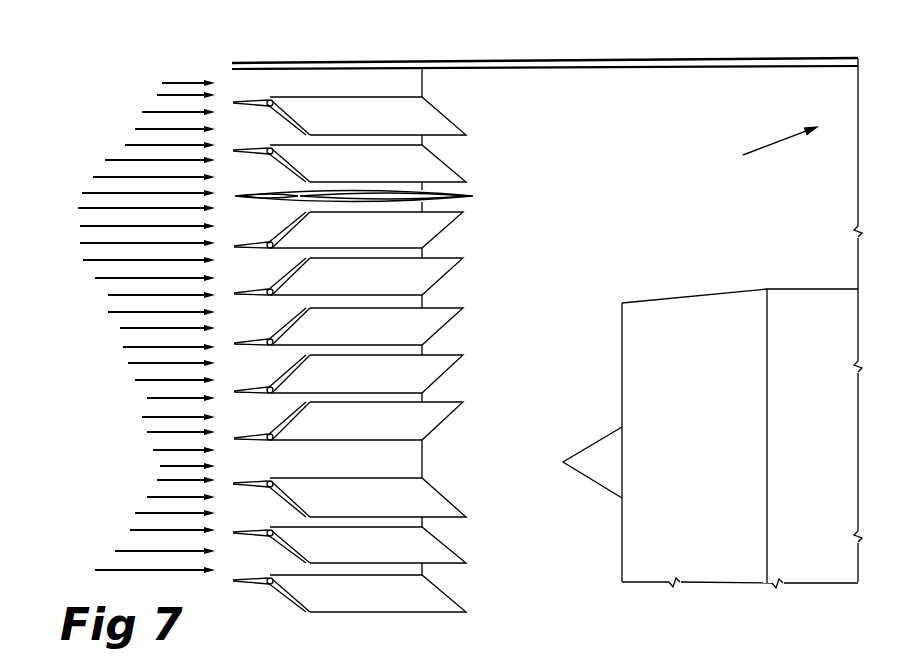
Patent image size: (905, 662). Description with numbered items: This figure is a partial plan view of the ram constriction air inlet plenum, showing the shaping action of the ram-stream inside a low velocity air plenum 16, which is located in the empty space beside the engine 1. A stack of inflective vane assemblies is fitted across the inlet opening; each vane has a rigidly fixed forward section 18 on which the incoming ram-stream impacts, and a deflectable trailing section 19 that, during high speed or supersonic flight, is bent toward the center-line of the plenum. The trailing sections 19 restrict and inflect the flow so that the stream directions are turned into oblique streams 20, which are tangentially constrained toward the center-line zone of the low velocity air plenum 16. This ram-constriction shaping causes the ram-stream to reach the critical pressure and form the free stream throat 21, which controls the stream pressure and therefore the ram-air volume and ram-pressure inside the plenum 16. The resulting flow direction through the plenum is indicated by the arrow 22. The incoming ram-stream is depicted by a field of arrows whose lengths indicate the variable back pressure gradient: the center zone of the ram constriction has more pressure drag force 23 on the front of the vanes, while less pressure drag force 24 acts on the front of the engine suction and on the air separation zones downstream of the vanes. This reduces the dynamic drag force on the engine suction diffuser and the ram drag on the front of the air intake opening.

The engine 1 is at (710, 438).
The low velocity air plenum 16 is at (826, 320).
The rigidly fixed forward section of the vanes 18 is at (255, 97).
The trailing section of vanes 19 is at (298, 118).
The oblique streams 20 is at (457, 148).
The free stream throat 21 is at (545, 144).
The flow direction 22 is at (760, 152).
The pressure drag force 23 is at (124, 325).
The pressure drag force 24 is at (155, 325).